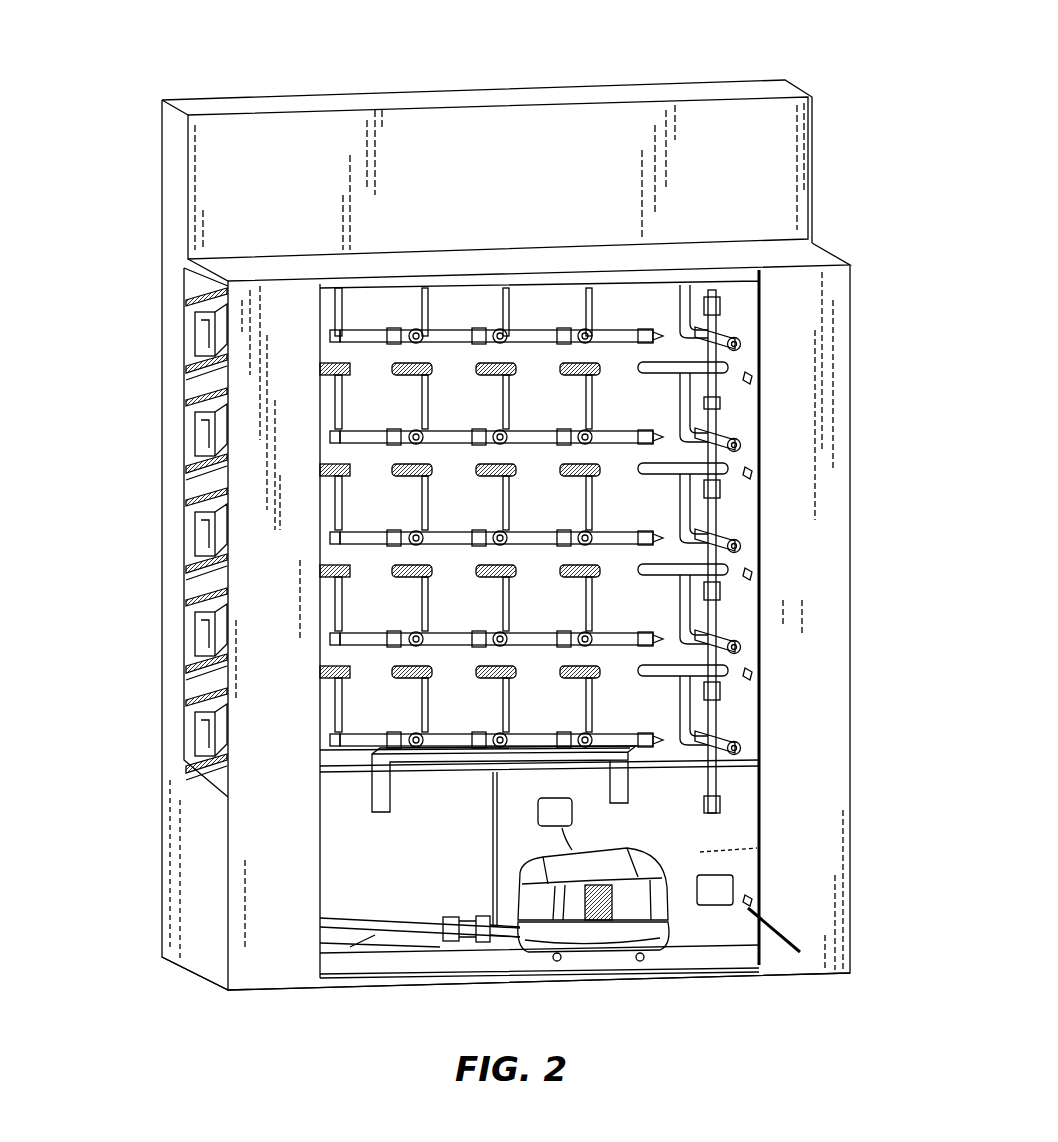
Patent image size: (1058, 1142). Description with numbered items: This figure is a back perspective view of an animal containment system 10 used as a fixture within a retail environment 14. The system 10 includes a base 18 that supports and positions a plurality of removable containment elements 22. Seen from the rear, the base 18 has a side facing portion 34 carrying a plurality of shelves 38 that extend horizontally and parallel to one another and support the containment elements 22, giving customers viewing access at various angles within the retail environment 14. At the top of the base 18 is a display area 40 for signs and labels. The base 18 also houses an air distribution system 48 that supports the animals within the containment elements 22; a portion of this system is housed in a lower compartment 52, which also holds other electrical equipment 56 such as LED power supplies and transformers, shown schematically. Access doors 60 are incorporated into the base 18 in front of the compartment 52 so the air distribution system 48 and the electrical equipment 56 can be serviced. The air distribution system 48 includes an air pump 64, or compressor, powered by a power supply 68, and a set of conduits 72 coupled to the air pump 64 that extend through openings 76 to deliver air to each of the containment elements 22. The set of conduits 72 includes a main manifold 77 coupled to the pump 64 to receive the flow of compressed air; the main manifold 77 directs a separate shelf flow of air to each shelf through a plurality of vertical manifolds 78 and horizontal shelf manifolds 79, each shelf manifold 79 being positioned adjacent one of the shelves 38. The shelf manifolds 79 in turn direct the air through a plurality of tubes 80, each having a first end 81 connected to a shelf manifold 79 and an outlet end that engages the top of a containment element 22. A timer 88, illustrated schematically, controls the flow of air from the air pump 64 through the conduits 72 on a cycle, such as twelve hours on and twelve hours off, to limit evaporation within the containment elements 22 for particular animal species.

The animal containment system 10 is at (120, 75).
The retail environment 14 is at (68, 584).
The base 18 is at (150, 845).
The removable containment elements 22 is at (187, 425).
The side facing portion 34 is at (185, 512).
The shelves 38 is at (185, 680).
The display area 40 is at (238, 172).
The air distribution system 48 is at (440, 838).
The lower compartment 52 is at (748, 850).
The other electrical equipment 56 is at (735, 895).
The access doors 60 is at (362, 872).
The air pump 64 is at (520, 900).
The power supply 68 is at (795, 940).
The set of conduits 72 is at (368, 945).
The openings 76 is at (390, 440).
The main manifold 77 is at (447, 942).
The vertical manifolds 78 is at (750, 390).
The horizontal shelf manifolds 79 is at (386, 437).
The tubes 80 is at (515, 605).
The first end 81 is at (500, 333).
The timer 88 is at (572, 812).